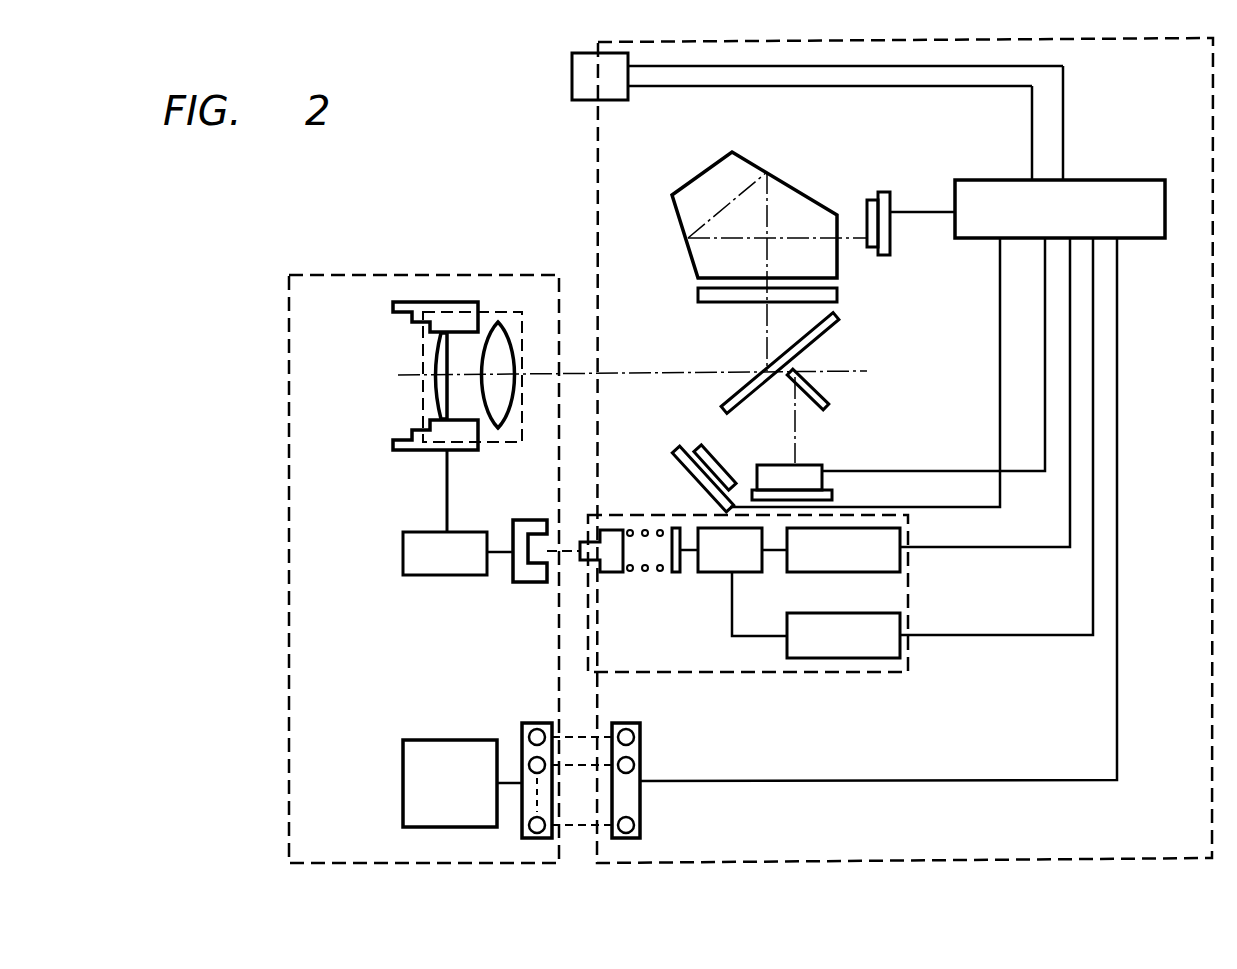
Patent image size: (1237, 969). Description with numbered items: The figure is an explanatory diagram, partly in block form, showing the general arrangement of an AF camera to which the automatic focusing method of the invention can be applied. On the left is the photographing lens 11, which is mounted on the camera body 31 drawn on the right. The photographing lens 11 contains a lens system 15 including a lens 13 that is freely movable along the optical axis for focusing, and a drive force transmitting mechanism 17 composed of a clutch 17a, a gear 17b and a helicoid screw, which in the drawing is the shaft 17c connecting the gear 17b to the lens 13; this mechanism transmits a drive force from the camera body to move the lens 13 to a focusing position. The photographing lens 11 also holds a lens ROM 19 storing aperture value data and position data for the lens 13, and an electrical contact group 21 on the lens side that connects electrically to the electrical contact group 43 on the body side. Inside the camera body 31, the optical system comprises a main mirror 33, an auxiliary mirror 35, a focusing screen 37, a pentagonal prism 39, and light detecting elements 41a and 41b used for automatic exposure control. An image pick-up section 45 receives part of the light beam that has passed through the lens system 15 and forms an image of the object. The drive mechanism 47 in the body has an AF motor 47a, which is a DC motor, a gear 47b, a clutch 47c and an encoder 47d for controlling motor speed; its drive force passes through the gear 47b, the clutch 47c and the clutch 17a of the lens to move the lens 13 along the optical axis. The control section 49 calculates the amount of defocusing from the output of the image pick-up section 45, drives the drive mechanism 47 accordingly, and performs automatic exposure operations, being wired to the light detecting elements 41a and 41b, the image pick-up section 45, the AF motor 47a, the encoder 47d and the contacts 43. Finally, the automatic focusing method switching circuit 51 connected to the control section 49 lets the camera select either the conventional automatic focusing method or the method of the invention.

The photographing lens 11 is at (491, 268).
The lens 13 is at (440, 395).
The lens system 15 is at (601, 376).
The drive force transmitting mechanism 17 is at (421, 516).
The clutch 17a is at (513, 528).
The gear 17b is at (403, 552).
The lens holding frame shaft 17c is at (415, 452).
The lens ROM 19 is at (446, 740).
The electrical contact group on the lens side 21 is at (537, 723).
The camera body 31 is at (1046, 34).
The main mirror 33 is at (828, 342).
The auxiliary mirror 35 is at (815, 388).
The focusing screen 37 is at (838, 296).
The pentagonal prism 39 is at (790, 186).
The light detecting element 41a is at (870, 197).
The light detecting element 41b is at (718, 462).
The electrical contact group on the body side 43 is at (642, 728).
The image pick-up section 45 is at (808, 465).
The drive mechanism 47 is at (778, 593).
The AF motor 47a is at (870, 572).
The gear 47b is at (715, 574).
The clutch 47c is at (612, 568).
The encoder 47d is at (787, 620).
The control section 49 is at (1122, 180).
The automatic focusing method switching circuit 51 is at (564, 79).